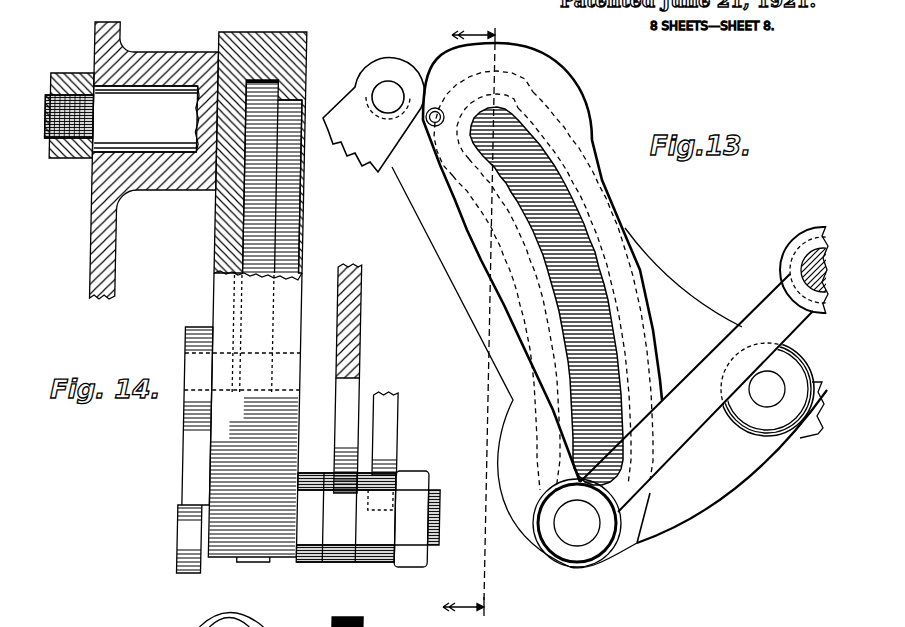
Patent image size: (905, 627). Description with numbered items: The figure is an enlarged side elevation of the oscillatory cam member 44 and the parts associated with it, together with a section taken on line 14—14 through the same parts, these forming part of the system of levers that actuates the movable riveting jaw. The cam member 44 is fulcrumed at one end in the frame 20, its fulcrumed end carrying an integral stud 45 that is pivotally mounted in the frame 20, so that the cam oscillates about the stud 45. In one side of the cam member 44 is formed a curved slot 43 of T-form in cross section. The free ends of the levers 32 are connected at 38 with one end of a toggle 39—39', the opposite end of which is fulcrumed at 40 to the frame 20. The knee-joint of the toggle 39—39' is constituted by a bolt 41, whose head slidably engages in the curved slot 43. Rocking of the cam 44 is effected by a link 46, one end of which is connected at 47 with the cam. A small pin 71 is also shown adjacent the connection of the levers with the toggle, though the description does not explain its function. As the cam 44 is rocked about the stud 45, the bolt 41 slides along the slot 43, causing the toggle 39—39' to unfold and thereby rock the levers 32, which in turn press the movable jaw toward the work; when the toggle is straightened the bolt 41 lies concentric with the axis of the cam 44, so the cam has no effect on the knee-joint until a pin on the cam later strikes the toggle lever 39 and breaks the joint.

In FIG. 13, the section line 14— 14 is at (473, 315).
In FIG. 14, the frame 20 is at (96, 258).
In FIG. 13, the levers 32 is at (374, 133).
In FIG. 13, the connection 38 is at (390, 92).
In FIG. 14, the toggle lever 39 is at (369, 378).
In FIG. 13, the toggle lever 39 is at (514, 367).
In FIG. 14, the toggle lever 39' is at (407, 433).
In FIG. 13, the toggle lever 39' is at (696, 393).
In FIG. 13, the fulcrum 40 is at (810, 262).
In FIG. 14, the bolt 41 is at (450, 506).
In FIG. 13, the bolt 41 is at (577, 547).
In FIG. 14, the curved slot 43 is at (263, 80).
In FIG. 13, the curved slot 43 is at (600, 277).
In FIG. 14, the cam member 44 is at (308, 61).
In FIG. 13, the cam member 44 is at (603, 186).
In FIG. 14, the stud 45 is at (178, 143).
In FIG. 13, the stud 45 is at (560, 106).
In FIG. 14, the link 46 is at (199, 461).
In FIG. 13, the link 46 is at (806, 440).
In FIG. 13, the connection 47 is at (768, 400).
In FIG. 13, the stop pin 71 is at (441, 111).